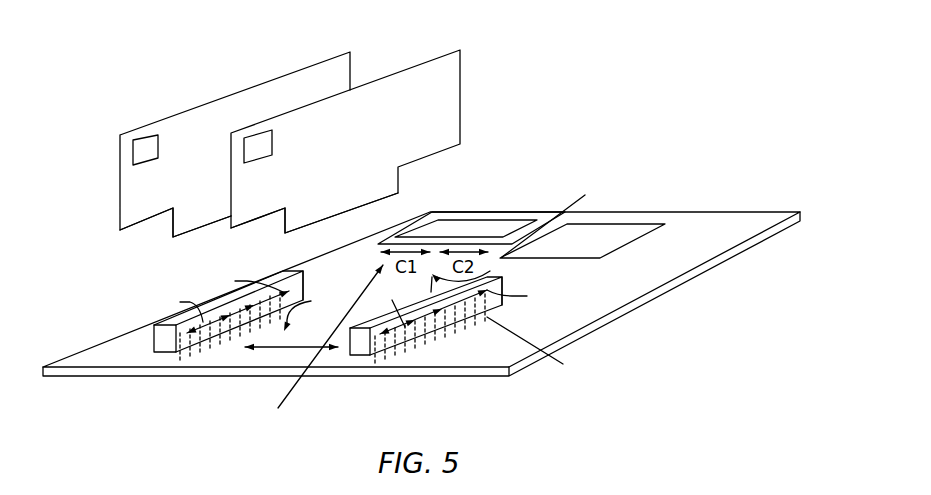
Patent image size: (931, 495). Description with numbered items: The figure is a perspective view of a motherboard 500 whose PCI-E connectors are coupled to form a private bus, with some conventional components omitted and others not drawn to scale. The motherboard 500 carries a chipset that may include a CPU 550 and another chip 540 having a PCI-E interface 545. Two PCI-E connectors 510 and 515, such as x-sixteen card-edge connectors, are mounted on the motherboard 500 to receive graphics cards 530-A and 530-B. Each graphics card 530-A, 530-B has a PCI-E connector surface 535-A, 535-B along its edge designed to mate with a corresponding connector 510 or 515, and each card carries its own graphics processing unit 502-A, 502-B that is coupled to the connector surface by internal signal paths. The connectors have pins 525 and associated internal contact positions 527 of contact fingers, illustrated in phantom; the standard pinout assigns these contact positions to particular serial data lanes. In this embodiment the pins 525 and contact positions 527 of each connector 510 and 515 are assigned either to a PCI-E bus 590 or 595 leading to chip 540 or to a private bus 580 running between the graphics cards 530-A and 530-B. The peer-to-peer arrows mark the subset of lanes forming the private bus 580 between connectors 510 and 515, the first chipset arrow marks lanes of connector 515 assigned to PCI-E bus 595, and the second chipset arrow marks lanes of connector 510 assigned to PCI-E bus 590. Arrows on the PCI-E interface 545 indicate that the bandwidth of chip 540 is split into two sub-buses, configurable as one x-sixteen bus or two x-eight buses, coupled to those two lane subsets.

The motherboard 500 is at (593, 330).
The graphics processing unit 502-A is at (253, 130).
The graphics processing unit 502-B is at (148, 137).
The PCI-E connector 510 is at (360, 357).
The PCI-E connector 515 is at (165, 352).
The pins 525 is at (578, 364).
The internal contact positions 527 is at (306, 278).
The graphics card 530-A is at (462, 82).
The graphics card 530-B is at (352, 65).
The PCI-E connector surface 535-A is at (297, 229).
The PCI-E connector surface 535-B is at (193, 230).
The chip 540 is at (475, 218).
The PCI-E interface 545 is at (585, 195).
The CPU 550 is at (633, 225).
The private bus 580 is at (273, 348).
The PCI-E bus 590 is at (490, 271).
The PCI-E bus 595 is at (278, 408).